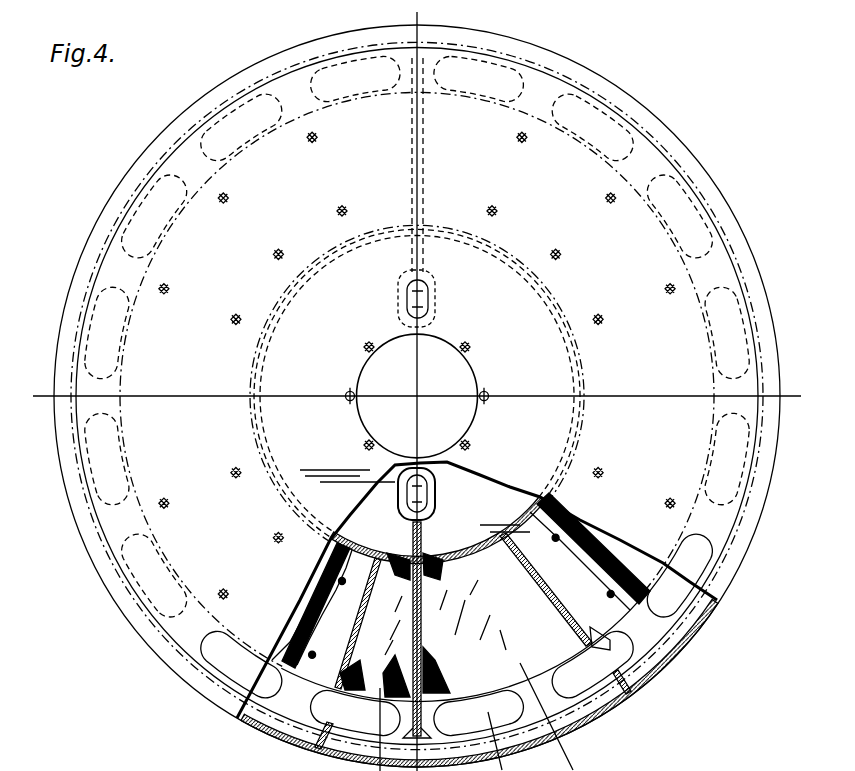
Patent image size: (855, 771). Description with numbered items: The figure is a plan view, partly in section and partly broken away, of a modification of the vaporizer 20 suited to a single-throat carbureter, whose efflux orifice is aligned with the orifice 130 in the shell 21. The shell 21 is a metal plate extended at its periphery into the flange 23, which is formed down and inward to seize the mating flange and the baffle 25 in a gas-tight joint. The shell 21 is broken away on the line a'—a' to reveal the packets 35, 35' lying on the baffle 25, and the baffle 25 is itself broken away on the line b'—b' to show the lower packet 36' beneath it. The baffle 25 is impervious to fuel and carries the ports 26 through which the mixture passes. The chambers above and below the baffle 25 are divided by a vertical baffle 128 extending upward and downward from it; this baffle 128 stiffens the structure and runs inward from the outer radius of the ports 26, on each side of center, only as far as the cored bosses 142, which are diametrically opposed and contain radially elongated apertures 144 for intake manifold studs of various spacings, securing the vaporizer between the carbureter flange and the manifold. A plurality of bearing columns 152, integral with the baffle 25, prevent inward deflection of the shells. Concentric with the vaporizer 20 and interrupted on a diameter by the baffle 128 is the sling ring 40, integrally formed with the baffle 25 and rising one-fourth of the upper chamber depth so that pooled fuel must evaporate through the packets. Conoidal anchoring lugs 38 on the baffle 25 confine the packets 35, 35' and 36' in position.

The vaporizer 20 is at (157, 148).
The flange 23 is at (72, 492).
The ports 26 is at (100, 518).
The conoidal lugs 38 is at (233, 313).
The shell 21 is at (332, 503).
The sling ring 40 is at (508, 533).
The orifice 130 is at (373, 422).
The bearing columns 152 is at (348, 390).
The vertical baffle 128 is at (428, 178).
The cored bosses 142 is at (399, 301).
The apertures 144 is at (424, 297).
The packet 35 is at (299, 605).
The baffle 25 is at (354, 655).
The packet 35' is at (575, 571).
The packet 36' is at (476, 717).
The break line a'— a' is at (485, 667).
The break line b'— b' is at (473, 702).